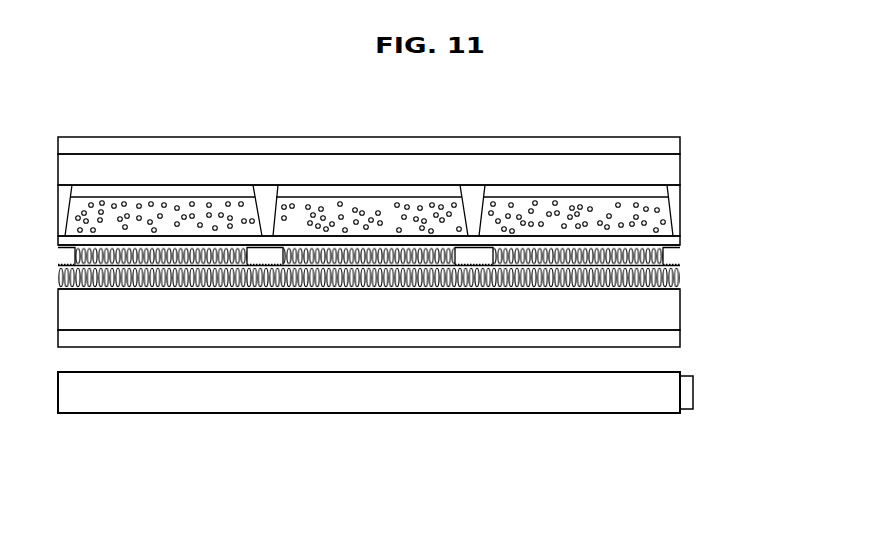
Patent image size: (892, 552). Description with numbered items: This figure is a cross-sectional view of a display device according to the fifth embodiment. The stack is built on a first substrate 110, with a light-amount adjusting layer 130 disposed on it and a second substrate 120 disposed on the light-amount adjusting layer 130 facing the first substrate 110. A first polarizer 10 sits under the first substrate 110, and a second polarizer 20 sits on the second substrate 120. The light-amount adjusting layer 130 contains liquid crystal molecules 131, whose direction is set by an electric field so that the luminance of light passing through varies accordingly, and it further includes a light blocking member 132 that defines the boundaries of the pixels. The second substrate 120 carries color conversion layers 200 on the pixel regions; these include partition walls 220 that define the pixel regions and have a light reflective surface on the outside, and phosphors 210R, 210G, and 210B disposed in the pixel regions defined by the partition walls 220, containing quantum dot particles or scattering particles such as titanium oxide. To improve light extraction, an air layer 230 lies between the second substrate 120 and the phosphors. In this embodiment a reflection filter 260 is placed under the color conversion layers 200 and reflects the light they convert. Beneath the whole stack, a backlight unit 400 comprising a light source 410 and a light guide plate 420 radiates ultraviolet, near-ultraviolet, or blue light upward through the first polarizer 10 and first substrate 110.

The first polarizer 10 is at (668, 338).
The second polarizer 20 is at (668, 145).
The first substrate 110 is at (667, 310).
The second substrate 120 is at (665, 167).
The light-amount adjusting layer 130 is at (434, 270).
The liquid crystal molecules 131 is at (672, 282).
The light blocking member 132 is at (668, 255).
The color conversion layers 200 is at (690, 186).
The red phosphor 210R is at (198, 205).
The green phosphor 210G is at (332, 206).
The blue phosphor 210B is at (540, 205).
The partition wall 220 is at (475, 210).
The air layer 230 is at (618, 190).
The reflection filter 260 is at (670, 243).
The backlight unit 400 is at (378, 443).
The light source 410 is at (688, 405).
The light guide plate 420 is at (633, 403).